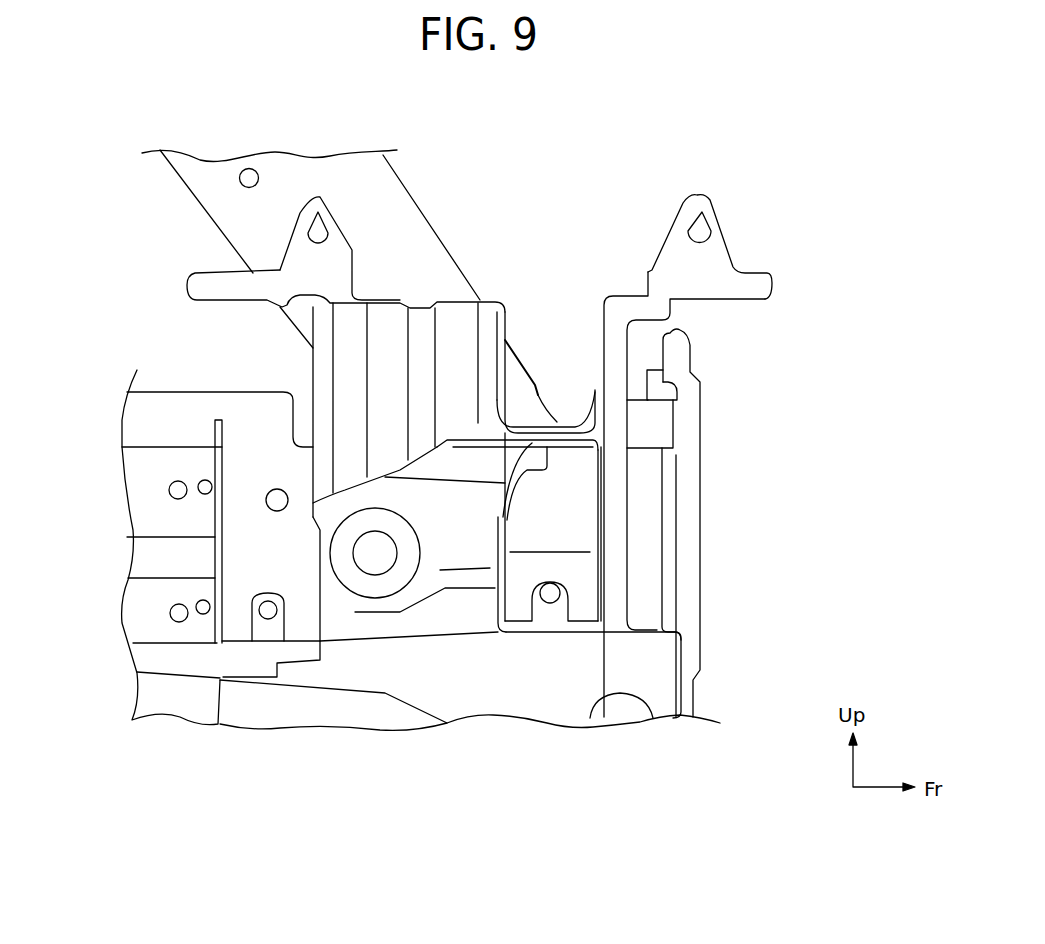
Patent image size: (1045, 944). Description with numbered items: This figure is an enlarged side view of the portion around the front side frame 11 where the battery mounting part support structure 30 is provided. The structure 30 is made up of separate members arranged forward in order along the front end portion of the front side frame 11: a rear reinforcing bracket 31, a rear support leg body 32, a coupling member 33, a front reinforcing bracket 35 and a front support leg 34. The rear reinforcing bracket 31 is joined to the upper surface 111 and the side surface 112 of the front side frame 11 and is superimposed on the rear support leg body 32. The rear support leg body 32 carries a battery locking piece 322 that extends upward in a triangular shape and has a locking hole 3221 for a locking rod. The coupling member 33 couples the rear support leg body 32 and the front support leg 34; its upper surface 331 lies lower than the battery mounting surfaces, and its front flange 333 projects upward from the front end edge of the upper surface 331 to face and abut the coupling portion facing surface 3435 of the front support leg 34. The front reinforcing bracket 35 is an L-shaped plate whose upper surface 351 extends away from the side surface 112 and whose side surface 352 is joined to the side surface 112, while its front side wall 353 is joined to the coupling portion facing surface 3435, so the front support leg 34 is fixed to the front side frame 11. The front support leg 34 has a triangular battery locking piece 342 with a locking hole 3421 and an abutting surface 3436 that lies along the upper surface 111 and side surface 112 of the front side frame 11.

The battery mounting part support structure 30 is at (788, 159).
The front side frame 11 is at (140, 412).
The upper surface of the front side frame 111 is at (493, 422).
The side surface of the front side frame 112 is at (140, 617).
The rear reinforcing bracket 31 is at (203, 559).
The rear support leg body 32 is at (422, 296).
The battery locking piece 322 is at (300, 231).
The locking hole 3221 is at (318, 222).
The coupling member 33 is at (529, 416).
The upper surface of the coupling member 331 is at (557, 423).
The front flange 333 is at (583, 387).
The front support leg 34 is at (790, 281).
The battery locking piece 342 is at (715, 232).
The locking hole 3421 is at (700, 226).
The coupling portion facing surface 3435 is at (583, 387).
The abutting surface 3436 is at (650, 580).
The front reinforcing bracket 35 is at (616, 535).
The upper surface of the front reinforcing bracket 351 is at (553, 583).
The side surface of the front reinforcing bracket 352 is at (587, 610).
The front side wall 353 is at (550, 603).